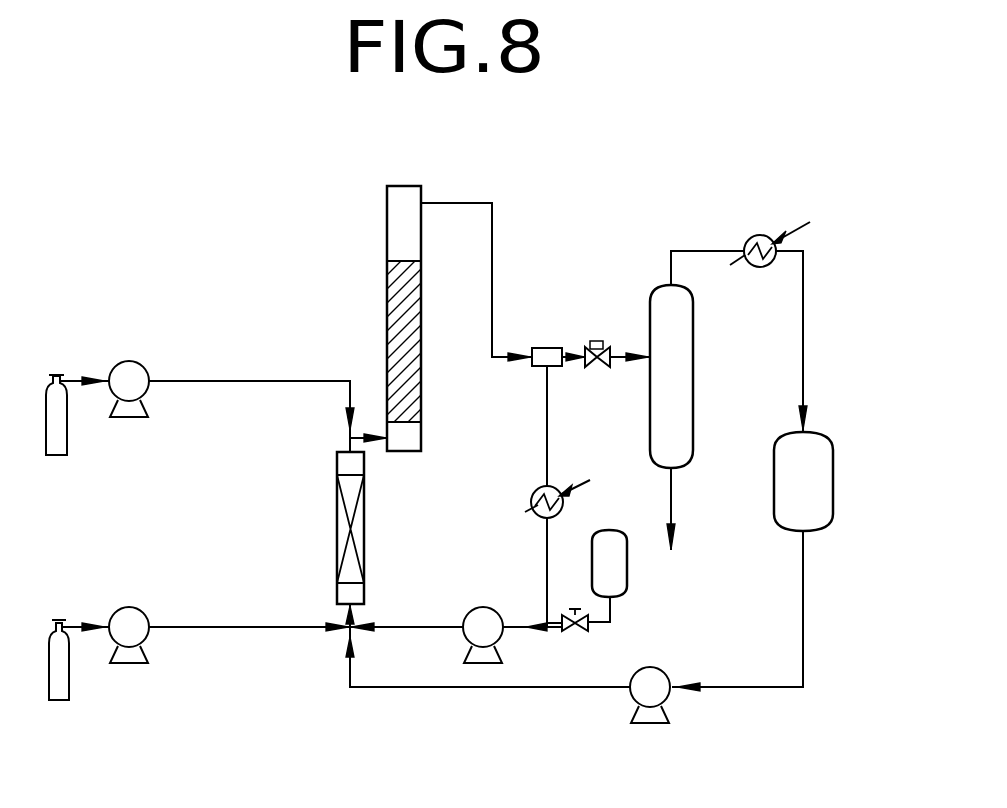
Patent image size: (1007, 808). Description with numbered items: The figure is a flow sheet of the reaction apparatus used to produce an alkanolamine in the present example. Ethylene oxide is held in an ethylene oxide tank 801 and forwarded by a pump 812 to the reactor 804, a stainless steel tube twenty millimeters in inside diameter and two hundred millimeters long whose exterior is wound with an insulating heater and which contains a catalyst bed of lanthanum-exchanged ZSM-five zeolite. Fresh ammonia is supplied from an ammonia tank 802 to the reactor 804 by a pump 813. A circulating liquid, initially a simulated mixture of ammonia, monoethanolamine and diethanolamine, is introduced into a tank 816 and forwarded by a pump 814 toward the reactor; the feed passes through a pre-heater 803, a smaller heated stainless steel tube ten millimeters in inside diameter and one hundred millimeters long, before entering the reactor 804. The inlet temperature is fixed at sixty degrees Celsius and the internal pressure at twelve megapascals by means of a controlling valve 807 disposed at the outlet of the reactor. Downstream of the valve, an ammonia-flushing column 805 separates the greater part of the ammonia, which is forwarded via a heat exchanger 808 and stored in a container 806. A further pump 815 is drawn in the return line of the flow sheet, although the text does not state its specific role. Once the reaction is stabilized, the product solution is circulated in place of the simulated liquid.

The ethylene oxide tank 801 is at (58, 376).
The ammonia tank 802 is at (52, 630).
The pre-heater 803 is at (363, 545).
The reactor 804 is at (420, 408).
The ammonia-flushing column 805 is at (693, 385).
The container 806 is at (833, 483).
The controlling valve 807 is at (597, 341).
The heat exchanger 808 is at (765, 235).
The pump 812 is at (136, 362).
The pump 813 is at (130, 612).
The pump 814 is at (481, 614).
The pump 815 is at (663, 673).
The tank 816 is at (612, 534).